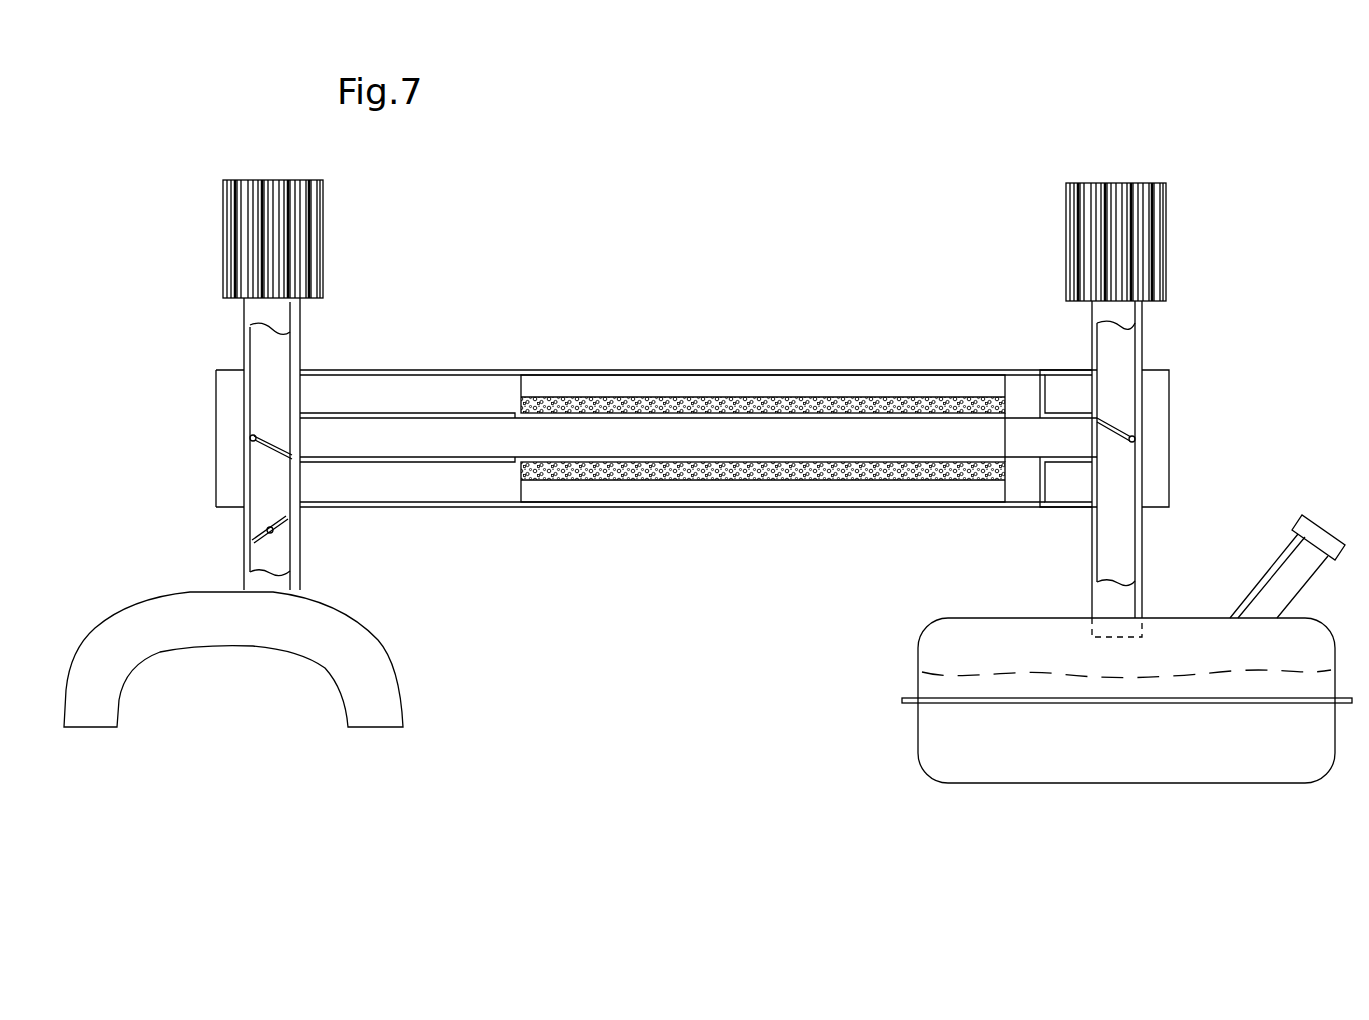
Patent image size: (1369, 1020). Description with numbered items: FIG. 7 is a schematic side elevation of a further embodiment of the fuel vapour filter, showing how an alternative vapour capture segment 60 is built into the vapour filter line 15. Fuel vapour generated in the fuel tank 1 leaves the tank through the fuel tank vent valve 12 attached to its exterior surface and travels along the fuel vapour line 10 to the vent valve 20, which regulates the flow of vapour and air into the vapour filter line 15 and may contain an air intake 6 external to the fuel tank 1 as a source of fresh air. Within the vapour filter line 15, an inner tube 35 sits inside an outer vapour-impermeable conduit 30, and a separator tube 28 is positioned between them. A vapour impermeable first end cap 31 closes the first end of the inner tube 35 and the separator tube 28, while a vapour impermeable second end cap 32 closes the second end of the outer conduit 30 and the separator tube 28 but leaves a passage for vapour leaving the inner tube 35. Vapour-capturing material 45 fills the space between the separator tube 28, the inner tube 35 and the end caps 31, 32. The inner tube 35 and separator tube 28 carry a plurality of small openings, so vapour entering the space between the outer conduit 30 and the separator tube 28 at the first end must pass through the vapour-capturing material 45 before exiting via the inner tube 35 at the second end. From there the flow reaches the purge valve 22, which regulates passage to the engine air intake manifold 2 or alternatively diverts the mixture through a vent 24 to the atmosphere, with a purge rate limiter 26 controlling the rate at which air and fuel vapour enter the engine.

The fuel tank 1 is at (981, 660).
The engine air intake manifold 2 is at (240, 708).
The air intake 6 is at (1152, 319).
The fuel vapour line 10 is at (1102, 555).
The fuel tank vent valve 12 is at (1072, 626).
The vapour filter line 15 is at (309, 450).
The vent valve 20 is at (1103, 468).
The purge valve 22 is at (287, 433).
The vent 24 is at (222, 309).
The purge rate limiter 26 is at (250, 539).
The separator tube 28 is at (766, 393).
The outer vapour-impermeable conduit 30 is at (657, 514).
The first end cap 31 is at (991, 440).
The second end cap 32 is at (526, 489).
The inner tube 35 is at (645, 408).
The vapour-capturing material 45 is at (876, 395).
The vapour capture segment 60 is at (702, 449).